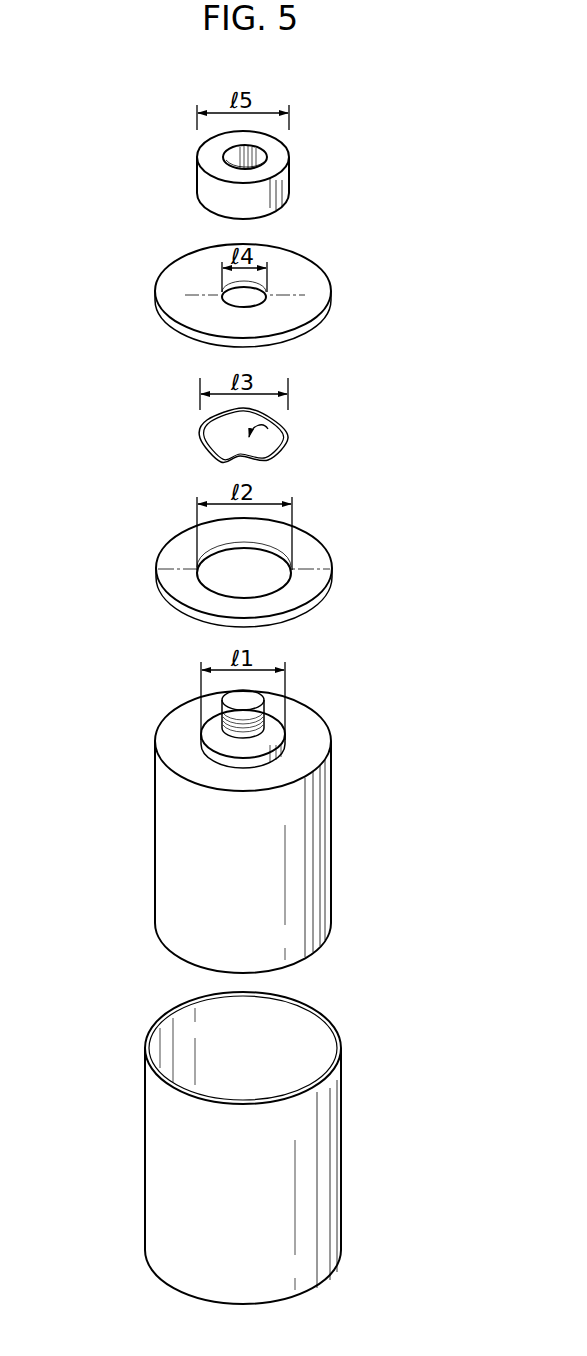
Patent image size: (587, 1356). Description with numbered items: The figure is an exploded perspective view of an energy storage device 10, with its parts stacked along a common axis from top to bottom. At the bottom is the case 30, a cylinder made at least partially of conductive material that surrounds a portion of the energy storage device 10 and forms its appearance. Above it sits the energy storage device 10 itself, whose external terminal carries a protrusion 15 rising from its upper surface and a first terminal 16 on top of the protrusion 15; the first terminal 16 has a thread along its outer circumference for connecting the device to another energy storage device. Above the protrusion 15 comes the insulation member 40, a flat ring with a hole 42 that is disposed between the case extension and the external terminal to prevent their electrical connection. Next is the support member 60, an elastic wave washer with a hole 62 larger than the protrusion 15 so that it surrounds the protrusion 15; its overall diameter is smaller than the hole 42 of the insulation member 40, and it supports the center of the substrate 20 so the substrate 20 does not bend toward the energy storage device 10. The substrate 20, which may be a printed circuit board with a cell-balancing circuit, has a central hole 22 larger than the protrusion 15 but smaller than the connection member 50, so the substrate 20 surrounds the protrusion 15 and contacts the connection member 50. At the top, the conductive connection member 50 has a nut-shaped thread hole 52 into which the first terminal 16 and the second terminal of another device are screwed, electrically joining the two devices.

The energy storage device 10 is at (162, 842).
The protrusion 15 is at (207, 737).
The first terminal 16 is at (224, 702).
The substrate 20 is at (164, 281).
The hole 22 is at (251, 295).
The case 30 is at (152, 1177).
The insulation member 40 is at (166, 557).
The hole 42 is at (259, 563).
The connection member 50 is at (199, 184).
The thread hole 52 is at (251, 157).
The support member 60 is at (200, 438).
The hole 62 is at (284, 444).